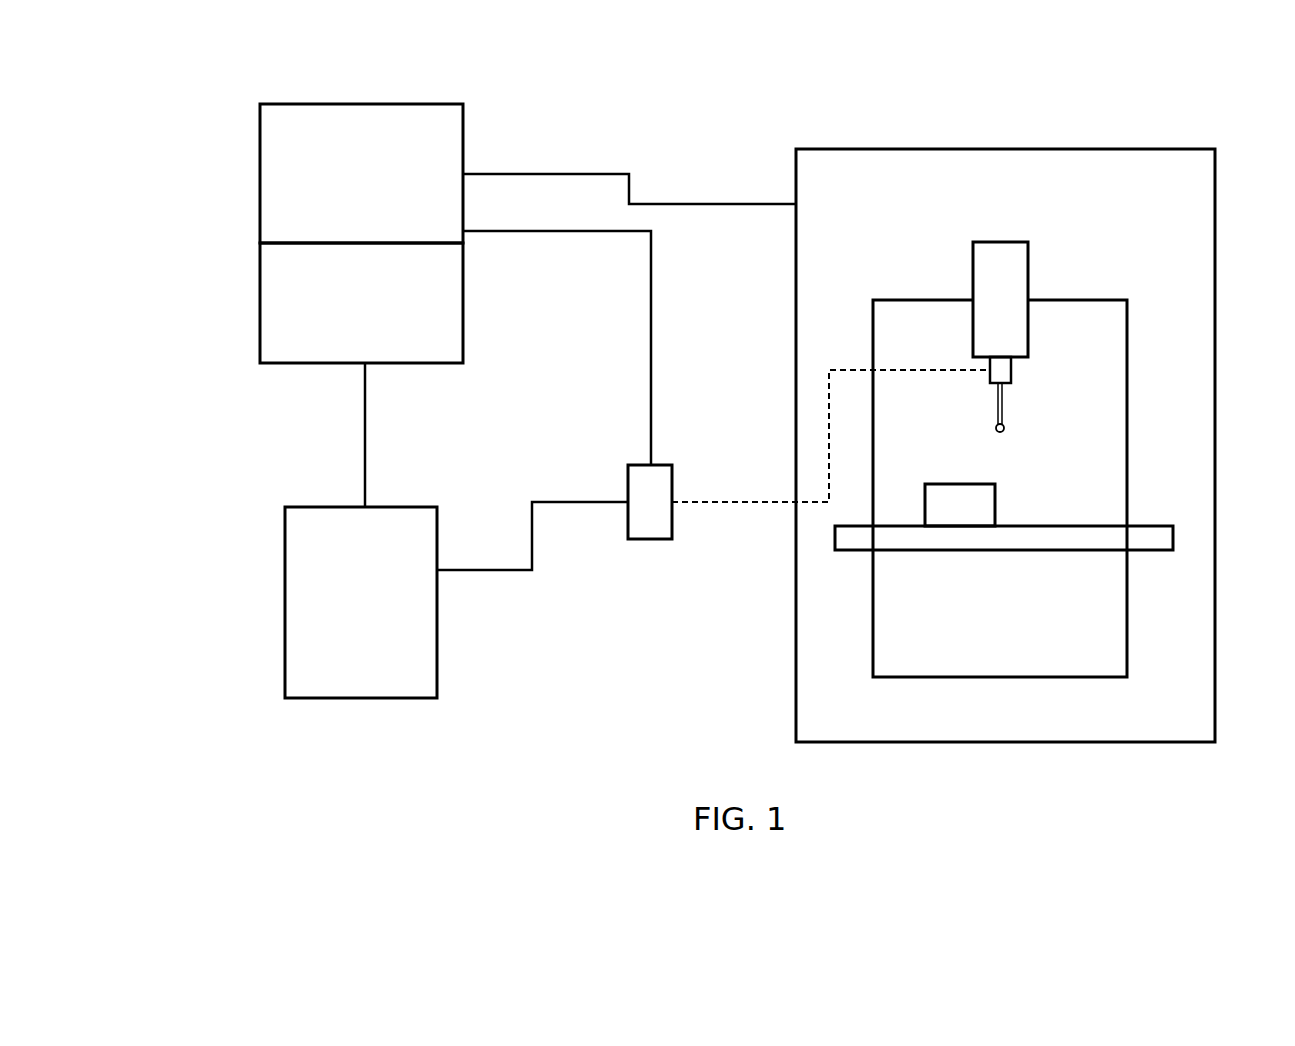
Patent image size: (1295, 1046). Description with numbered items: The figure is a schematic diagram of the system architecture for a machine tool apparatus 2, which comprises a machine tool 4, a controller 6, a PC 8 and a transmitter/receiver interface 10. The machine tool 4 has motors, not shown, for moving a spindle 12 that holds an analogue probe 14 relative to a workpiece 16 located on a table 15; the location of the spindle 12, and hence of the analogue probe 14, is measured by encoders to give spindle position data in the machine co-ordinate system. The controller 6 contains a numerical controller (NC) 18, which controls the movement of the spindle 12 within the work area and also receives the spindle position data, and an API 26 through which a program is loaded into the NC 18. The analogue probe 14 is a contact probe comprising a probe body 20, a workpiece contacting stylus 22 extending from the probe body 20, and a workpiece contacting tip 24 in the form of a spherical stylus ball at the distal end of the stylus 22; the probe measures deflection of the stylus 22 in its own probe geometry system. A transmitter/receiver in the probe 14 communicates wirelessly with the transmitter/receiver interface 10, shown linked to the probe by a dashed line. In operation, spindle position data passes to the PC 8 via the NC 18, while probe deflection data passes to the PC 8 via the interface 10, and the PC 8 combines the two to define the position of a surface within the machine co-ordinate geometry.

The machine tool apparatus 2 is at (771, 88).
The machine tool 4 is at (1028, 148).
The controller 6 is at (306, 233).
The PC 8 is at (284, 608).
The transmitter/receiver interface 10 is at (648, 541).
The spindle 12 is at (1030, 272).
The analogue probe 14 is at (1086, 401).
The table 15 is at (1160, 541).
The workpiece 16 is at (995, 497).
The numerical controller 18 is at (258, 172).
The probe body 20 is at (1012, 384).
The stylus 22 is at (1003, 408).
The workpiece contacting tip 24 is at (1005, 427).
The API 26 is at (258, 315).